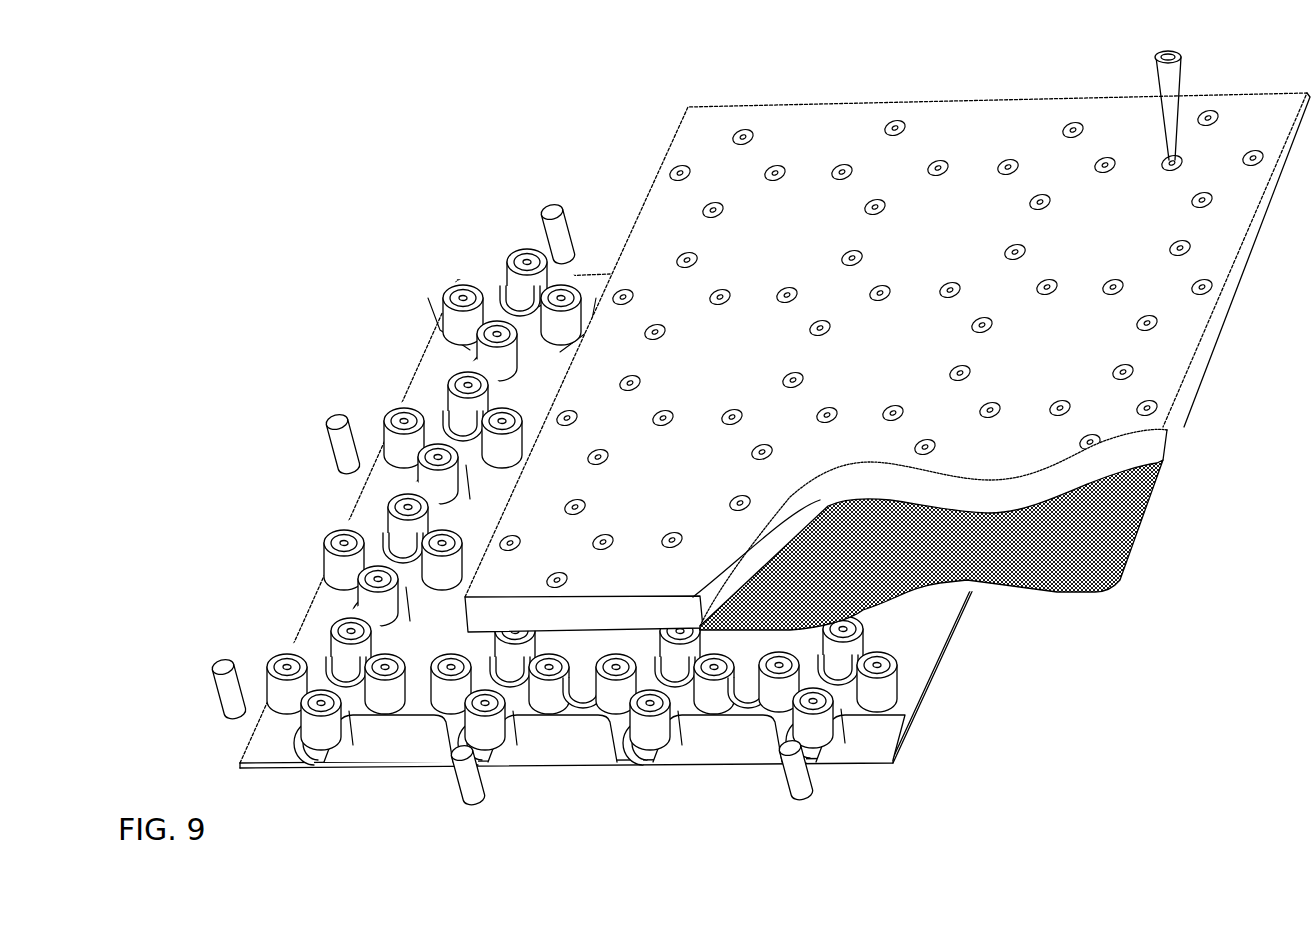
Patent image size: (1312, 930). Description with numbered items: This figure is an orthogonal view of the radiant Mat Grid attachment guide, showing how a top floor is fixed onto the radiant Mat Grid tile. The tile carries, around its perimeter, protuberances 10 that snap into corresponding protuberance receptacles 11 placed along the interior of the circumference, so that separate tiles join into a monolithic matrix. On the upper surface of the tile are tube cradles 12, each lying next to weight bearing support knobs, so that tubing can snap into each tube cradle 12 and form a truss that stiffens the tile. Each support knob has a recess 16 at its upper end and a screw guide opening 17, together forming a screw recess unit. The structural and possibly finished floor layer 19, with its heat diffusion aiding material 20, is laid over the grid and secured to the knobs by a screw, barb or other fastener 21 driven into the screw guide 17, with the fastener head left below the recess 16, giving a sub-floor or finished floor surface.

The protuberance 10 is at (222, 660).
The protuberance receptacle 11 is at (333, 540).
The tube cradle 12 is at (447, 385).
The recess 16 is at (516, 260).
The screw guide opening 17 is at (447, 347).
The structural and possibly finished floor layer 19 is at (1060, 358).
The heat diffusion aiding material 20 is at (1137, 530).
The screw, barb or other fastener 21 is at (1178, 110).